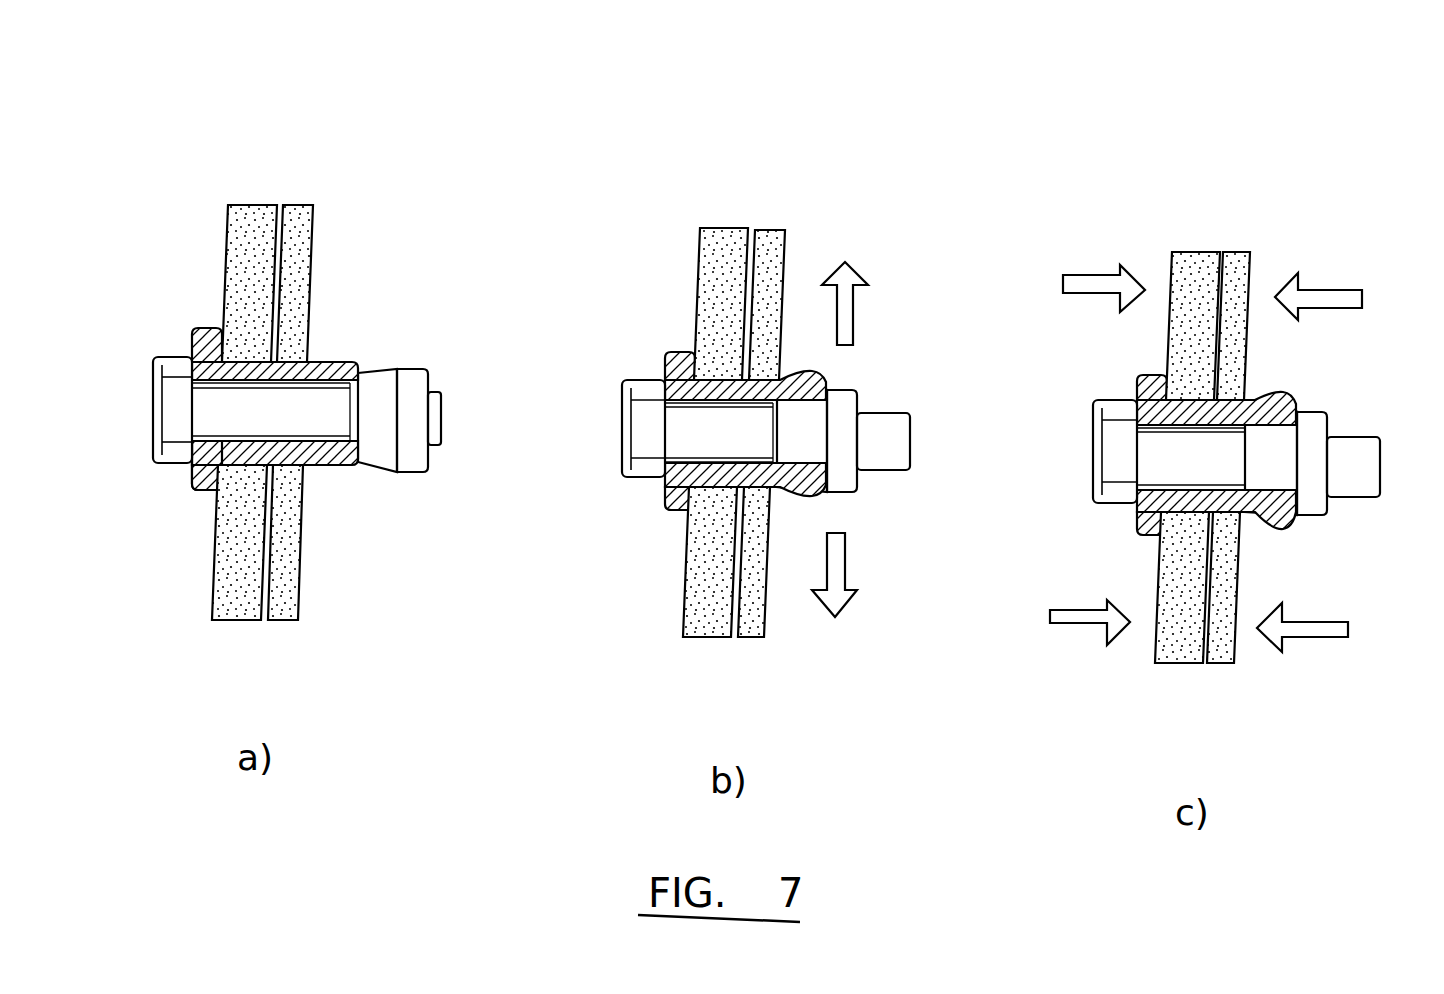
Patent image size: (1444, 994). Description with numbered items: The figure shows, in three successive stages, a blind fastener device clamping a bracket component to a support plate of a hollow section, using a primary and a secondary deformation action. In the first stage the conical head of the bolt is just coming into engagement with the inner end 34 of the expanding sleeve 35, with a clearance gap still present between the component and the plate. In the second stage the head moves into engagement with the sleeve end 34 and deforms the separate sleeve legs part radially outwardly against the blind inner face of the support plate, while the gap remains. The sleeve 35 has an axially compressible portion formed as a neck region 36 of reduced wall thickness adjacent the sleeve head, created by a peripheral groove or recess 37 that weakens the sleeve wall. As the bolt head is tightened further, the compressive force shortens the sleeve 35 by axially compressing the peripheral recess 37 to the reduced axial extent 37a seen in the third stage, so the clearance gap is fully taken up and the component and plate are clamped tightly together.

The inner end 34 is at (355, 368).
The expanding sleeve 35 is at (325, 465).
The neck region 36 is at (205, 457).
The peripheral groove 37 is at (693, 492).
The reduced axial extent 37a is at (1167, 510).